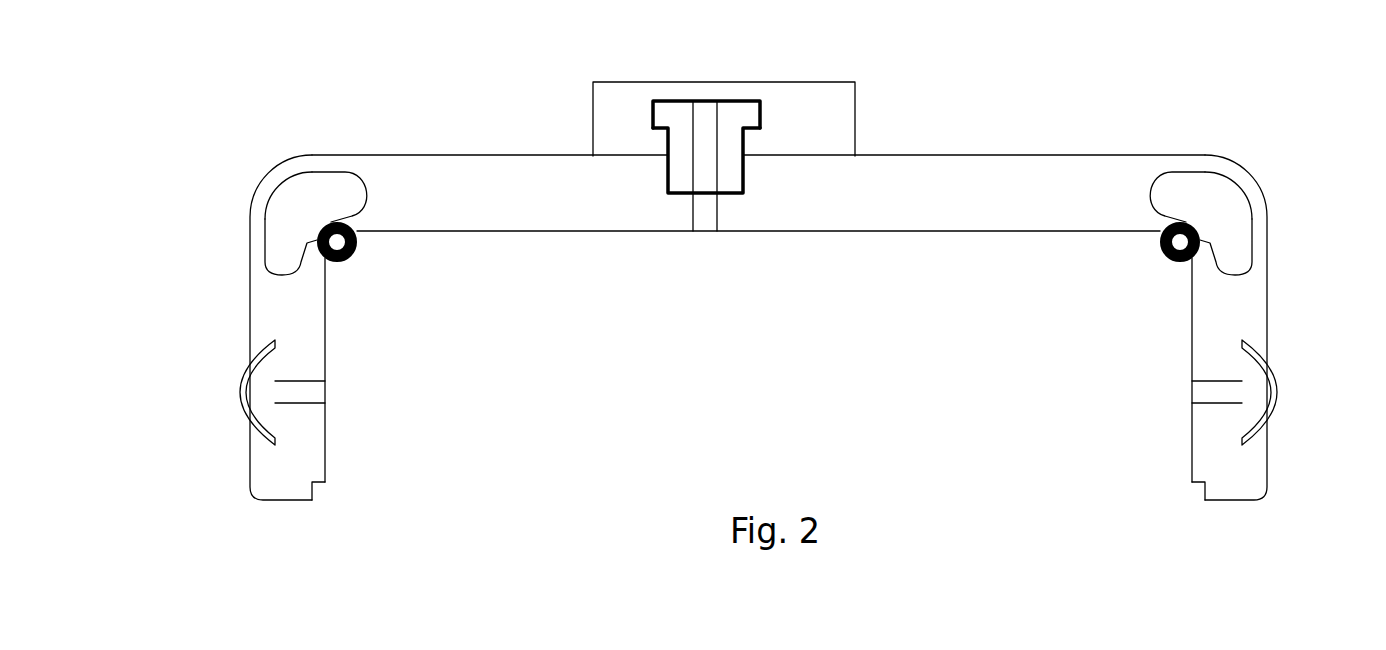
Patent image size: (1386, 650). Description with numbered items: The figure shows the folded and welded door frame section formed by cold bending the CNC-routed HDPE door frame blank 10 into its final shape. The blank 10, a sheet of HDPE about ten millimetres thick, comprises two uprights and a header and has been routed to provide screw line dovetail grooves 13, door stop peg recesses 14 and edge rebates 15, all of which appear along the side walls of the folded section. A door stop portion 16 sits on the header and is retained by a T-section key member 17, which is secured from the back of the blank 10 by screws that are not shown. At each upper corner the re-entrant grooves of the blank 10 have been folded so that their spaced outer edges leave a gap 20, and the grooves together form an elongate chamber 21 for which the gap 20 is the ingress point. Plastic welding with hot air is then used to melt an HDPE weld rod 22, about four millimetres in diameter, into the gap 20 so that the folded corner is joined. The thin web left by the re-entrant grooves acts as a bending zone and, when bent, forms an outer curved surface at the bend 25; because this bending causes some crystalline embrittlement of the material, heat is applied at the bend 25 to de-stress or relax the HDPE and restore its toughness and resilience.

The door frame blank 10 is at (928, 210).
The screw line dovetail groove 13 is at (279, 341).
The door stop peg recess 14 is at (668, 178).
The edge rebate 15 is at (314, 487).
The door stop portion 16 is at (810, 125).
The T-section key member 17 is at (673, 115).
The gap 20 is at (313, 222).
The elongate chamber 21 is at (328, 188).
The HDPE weld rod 22 is at (353, 253).
The bend 25 is at (268, 205).